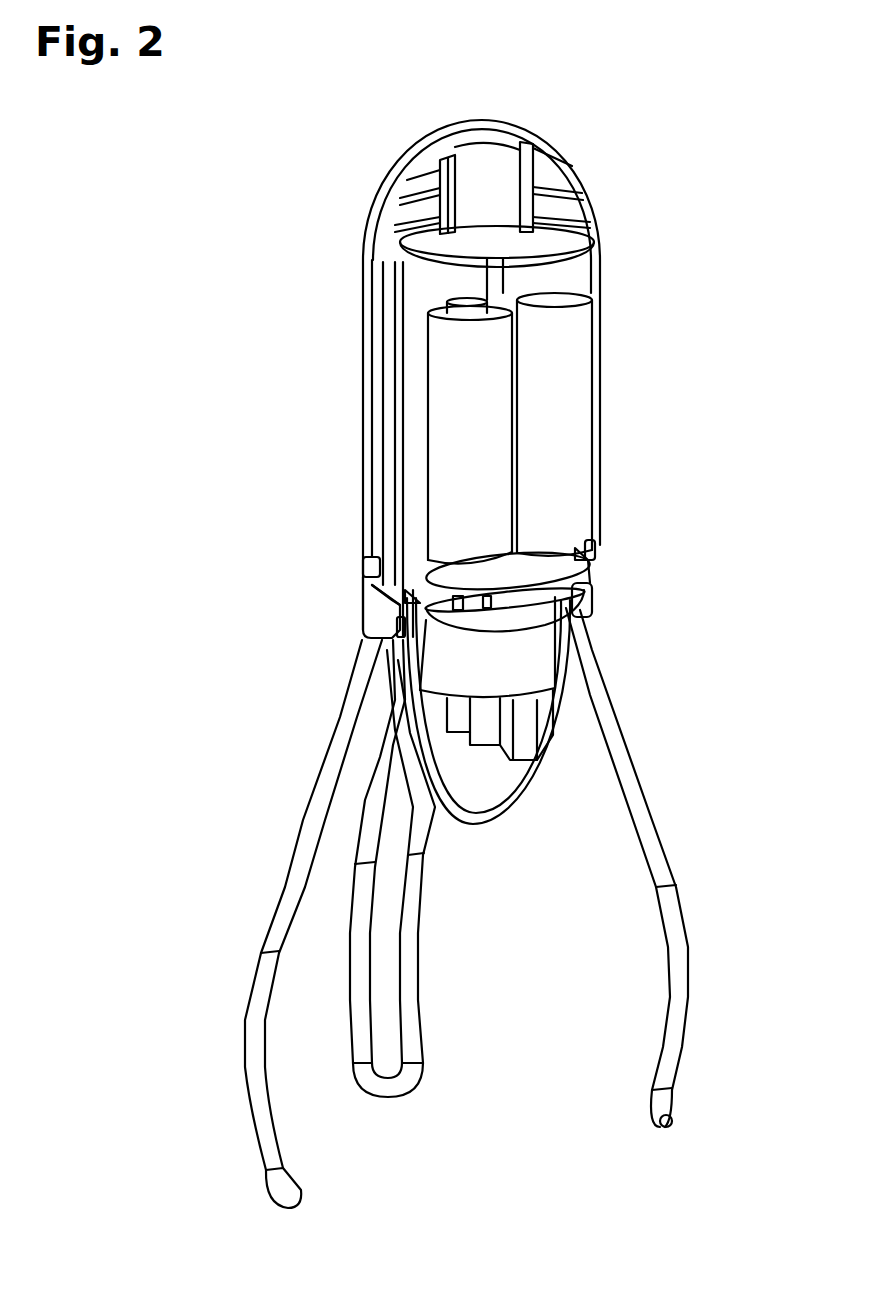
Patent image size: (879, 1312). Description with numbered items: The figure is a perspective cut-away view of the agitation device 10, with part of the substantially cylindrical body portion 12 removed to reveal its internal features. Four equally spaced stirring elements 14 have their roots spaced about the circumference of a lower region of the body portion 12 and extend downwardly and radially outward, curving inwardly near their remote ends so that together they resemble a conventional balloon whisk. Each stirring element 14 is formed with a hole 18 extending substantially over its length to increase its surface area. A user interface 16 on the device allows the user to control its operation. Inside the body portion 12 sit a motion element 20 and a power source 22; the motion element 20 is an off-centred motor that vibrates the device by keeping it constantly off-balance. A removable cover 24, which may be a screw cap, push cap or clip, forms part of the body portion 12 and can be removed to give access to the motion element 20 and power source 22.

The agitation device 10 is at (623, 176).
The body portion 12 is at (362, 415).
The stirring elements 14 is at (299, 1175).
The user interface 16 is at (407, 182).
The hole 18 is at (384, 1043).
The motion element 20 is at (528, 668).
The power source 22 is at (535, 432).
The removable cover 24 is at (503, 822).